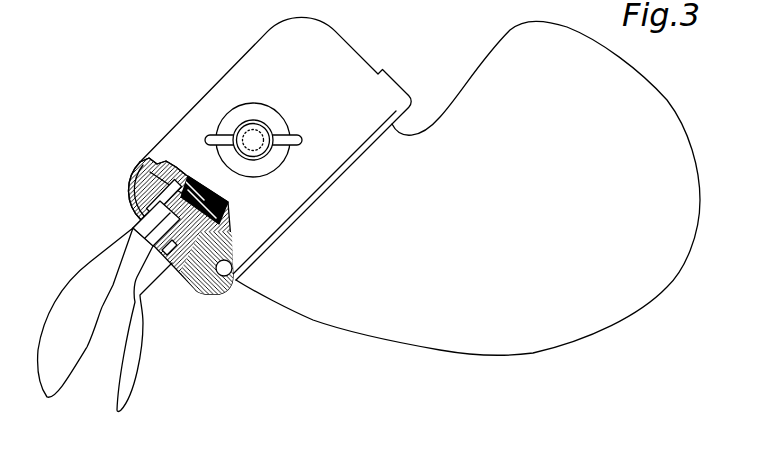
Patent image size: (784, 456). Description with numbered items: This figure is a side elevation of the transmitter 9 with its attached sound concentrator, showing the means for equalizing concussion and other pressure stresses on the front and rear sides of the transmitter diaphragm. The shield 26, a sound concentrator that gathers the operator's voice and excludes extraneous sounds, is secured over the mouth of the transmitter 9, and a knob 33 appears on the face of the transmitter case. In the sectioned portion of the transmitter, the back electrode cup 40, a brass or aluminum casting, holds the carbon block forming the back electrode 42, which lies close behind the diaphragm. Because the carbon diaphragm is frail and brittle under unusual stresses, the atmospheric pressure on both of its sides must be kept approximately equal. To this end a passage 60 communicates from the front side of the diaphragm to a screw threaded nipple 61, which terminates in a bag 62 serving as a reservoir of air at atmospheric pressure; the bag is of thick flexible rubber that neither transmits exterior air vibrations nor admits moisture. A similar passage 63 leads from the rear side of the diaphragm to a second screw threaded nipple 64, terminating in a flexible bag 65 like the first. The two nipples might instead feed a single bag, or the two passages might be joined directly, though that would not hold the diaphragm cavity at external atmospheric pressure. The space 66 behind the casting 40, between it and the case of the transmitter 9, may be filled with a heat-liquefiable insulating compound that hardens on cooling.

The transmitter 9 is at (173, 133).
The shield 26 is at (468, 188).
The wing screw knob 33 is at (253, 88).
The back electrode cup 40 is at (172, 190).
The back electrode 42 is at (153, 172).
The passage 60 is at (188, 265).
The screw threaded nipple 61 is at (167, 262).
The bag 62 is at (139, 329).
The passage 63 is at (158, 200).
The screw threaded nipple 64 is at (133, 228).
The flexible bag 65 is at (85, 312).
The space 66 is at (138, 163).